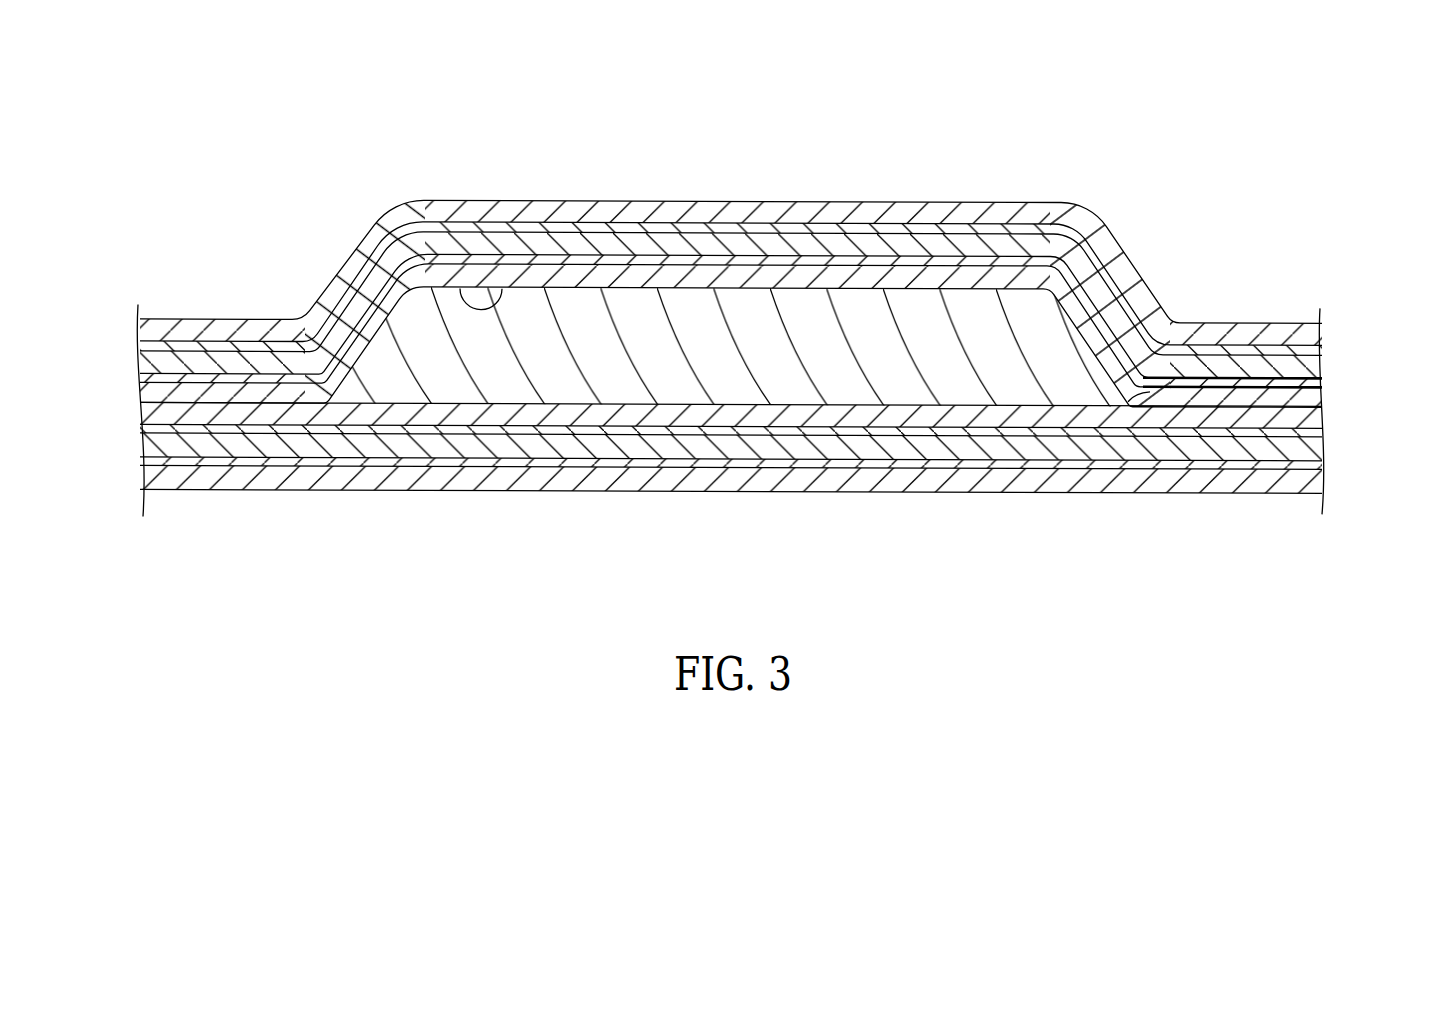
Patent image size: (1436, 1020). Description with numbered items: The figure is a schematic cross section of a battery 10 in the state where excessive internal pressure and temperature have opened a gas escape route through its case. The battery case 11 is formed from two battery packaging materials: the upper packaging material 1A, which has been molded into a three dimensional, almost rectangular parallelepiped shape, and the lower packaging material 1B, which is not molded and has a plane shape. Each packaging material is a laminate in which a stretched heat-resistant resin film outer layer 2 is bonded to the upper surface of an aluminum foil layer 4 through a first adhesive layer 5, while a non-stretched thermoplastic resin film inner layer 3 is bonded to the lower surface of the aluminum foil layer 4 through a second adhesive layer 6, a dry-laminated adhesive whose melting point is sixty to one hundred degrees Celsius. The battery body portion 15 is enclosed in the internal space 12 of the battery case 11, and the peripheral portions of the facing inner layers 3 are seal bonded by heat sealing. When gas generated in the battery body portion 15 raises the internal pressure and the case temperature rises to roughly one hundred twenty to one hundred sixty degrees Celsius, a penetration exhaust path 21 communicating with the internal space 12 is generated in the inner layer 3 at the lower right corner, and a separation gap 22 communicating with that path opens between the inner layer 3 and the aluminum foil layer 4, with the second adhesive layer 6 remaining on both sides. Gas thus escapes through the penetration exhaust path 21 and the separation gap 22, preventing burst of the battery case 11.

The battery 10 is at (1037, 154).
The packaging material 1A is at (335, 280).
The packaging material 1B is at (332, 480).
The battery case 11 is at (670, 208).
The internal space 12 is at (455, 293).
The battery body portion 15 is at (475, 365).
The stretched heat-resistant resin film layer (outer layer) 2 is at (897, 212).
The first adhesive layer 5 is at (857, 225).
The aluminum foil layer 4 is at (1130, 330).
The second adhesive layer 6 is at (1110, 327).
The non-stretched thermoplastic resin film layer (inner layer) 3 is at (1088, 320).
The penetration exhaust path 21 is at (1140, 392).
The separation gap 22 is at (1316, 382).